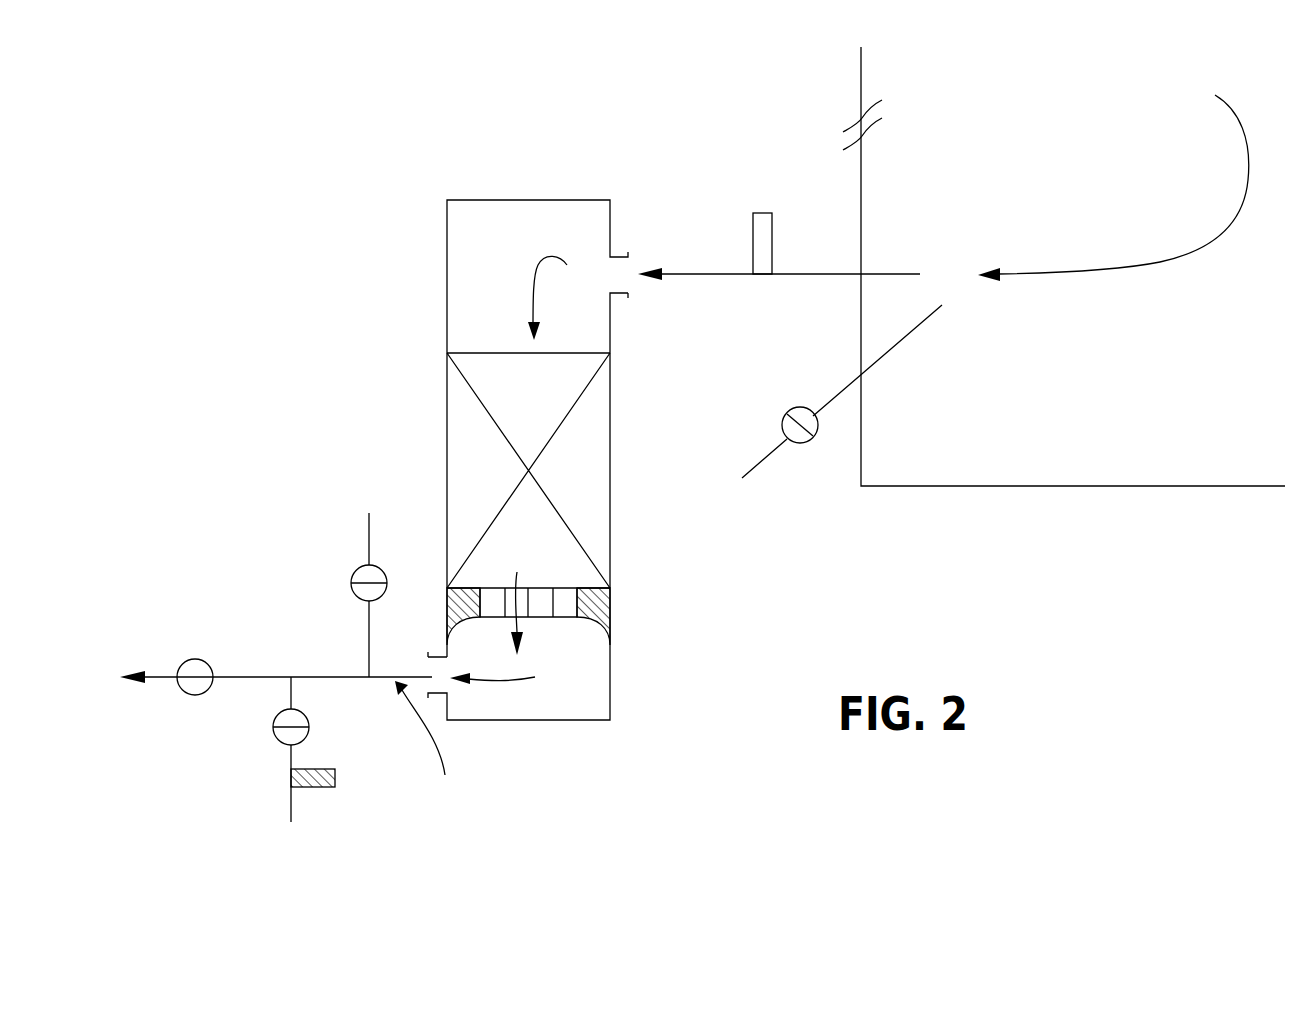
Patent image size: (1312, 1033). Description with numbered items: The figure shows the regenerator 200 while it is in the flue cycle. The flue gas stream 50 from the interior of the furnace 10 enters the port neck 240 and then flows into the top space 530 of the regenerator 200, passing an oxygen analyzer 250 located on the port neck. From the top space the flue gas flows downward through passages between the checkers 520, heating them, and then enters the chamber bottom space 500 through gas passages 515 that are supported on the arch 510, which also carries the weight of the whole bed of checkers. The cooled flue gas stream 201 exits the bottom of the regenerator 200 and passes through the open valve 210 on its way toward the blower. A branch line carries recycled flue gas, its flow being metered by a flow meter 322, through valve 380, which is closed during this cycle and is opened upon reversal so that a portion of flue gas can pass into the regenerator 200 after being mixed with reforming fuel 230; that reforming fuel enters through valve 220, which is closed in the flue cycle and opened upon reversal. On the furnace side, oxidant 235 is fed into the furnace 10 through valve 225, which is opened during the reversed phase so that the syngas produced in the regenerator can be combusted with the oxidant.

The regenerator 200 is at (488, 199).
The top space 530 is at (500, 247).
The checkers 520 is at (600, 488).
The gas passages 515 is at (565, 588).
The arch 510 is at (612, 608).
The chamber bottom space 500 is at (585, 705).
The port neck 240 is at (801, 276).
The oxygen analyzer 250 is at (763, 212).
The flue gas stream 50 is at (1125, 295).
The furnace 10 is at (1180, 488).
The oxidant 235 is at (745, 477).
The valve 225 is at (806, 444).
The valve 210 is at (198, 695).
The reforming fuel 230 is at (369, 535).
The valve 220 is at (352, 585).
The valve 380 is at (306, 716).
The flow meter 322 is at (326, 789).
The cooled flue gas stream 201 is at (433, 739).